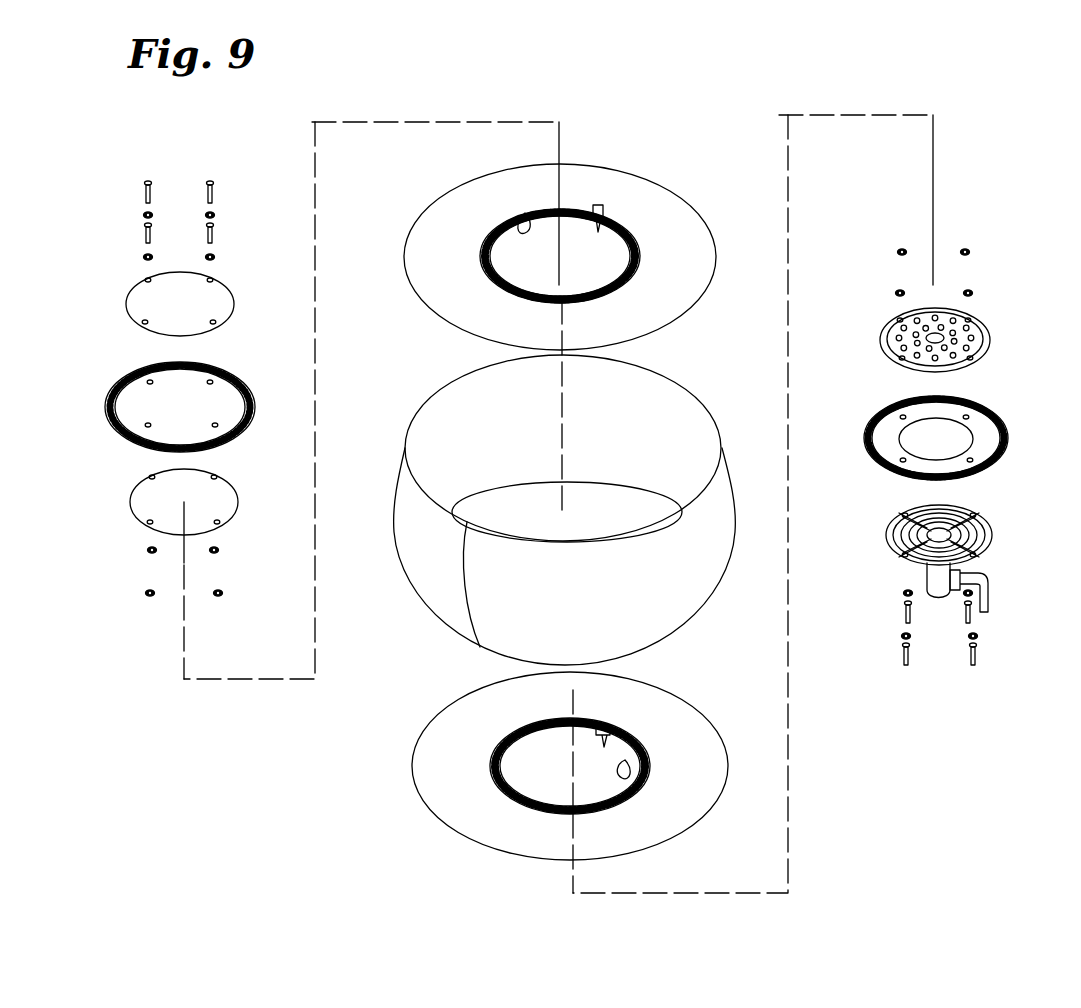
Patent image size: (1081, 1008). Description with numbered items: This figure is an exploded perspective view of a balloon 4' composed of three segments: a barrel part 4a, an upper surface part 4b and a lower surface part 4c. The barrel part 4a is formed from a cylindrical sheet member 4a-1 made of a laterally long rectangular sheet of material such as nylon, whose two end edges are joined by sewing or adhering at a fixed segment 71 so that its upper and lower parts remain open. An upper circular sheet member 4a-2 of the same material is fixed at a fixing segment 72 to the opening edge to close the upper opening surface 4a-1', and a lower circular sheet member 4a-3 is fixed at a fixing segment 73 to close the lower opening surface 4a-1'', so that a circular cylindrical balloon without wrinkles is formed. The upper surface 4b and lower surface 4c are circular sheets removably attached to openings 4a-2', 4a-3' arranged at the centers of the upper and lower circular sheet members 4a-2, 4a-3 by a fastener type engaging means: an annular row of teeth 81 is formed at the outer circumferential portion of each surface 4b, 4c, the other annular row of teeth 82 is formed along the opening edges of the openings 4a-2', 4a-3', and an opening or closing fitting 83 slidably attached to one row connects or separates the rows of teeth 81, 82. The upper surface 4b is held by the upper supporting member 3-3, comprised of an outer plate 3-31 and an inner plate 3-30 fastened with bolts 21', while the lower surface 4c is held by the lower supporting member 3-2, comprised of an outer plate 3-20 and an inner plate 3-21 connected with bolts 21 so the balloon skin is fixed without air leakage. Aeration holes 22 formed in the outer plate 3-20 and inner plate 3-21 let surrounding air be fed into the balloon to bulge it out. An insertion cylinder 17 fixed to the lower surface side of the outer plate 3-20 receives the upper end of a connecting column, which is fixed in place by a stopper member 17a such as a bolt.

The balloon 4' is at (745, 105).
The barrel part 4a is at (359, 677).
The cylindrical sheet member 4a-1 is at (535, 536).
The upper opening surface 4a-1' is at (556, 447).
The lower opening surface 4a-1'' is at (567, 495).
The upper circular sheet member 4a-2 is at (533, 257).
The opening of upper circular sheet member 4a-2' is at (599, 229).
The lower circular sheet member 4a-3 is at (565, 765).
The opening of lower circular sheet member 4a-3' is at (522, 795).
The fixed segment 71 is at (477, 628).
The fixing segment 72 is at (718, 425).
The fixing segment 73 is at (697, 627).
The annular row of teeth 81 is at (116, 426).
The annular row of teeth 82 is at (525, 213).
The opening or closing fitting 83 is at (597, 205).
The lower supporting member 3-2 is at (871, 321).
The inner plate 3-21 is at (990, 345).
The aeration holes 22 is at (970, 318).
The upper surface part 4b is at (135, 398).
The lower surface part 4c is at (990, 437).
The outer plate 3-20 is at (990, 530).
The insertion cylinder 17 is at (928, 580).
The stopper member 17a is at (990, 598).
The bolts 21 is at (946, 632).
The bolts 21' is at (182, 214).
The upper supporting member 3-3 is at (123, 262).
The outer plate 3-31 is at (136, 303).
The inner plate 3-30 is at (146, 503).